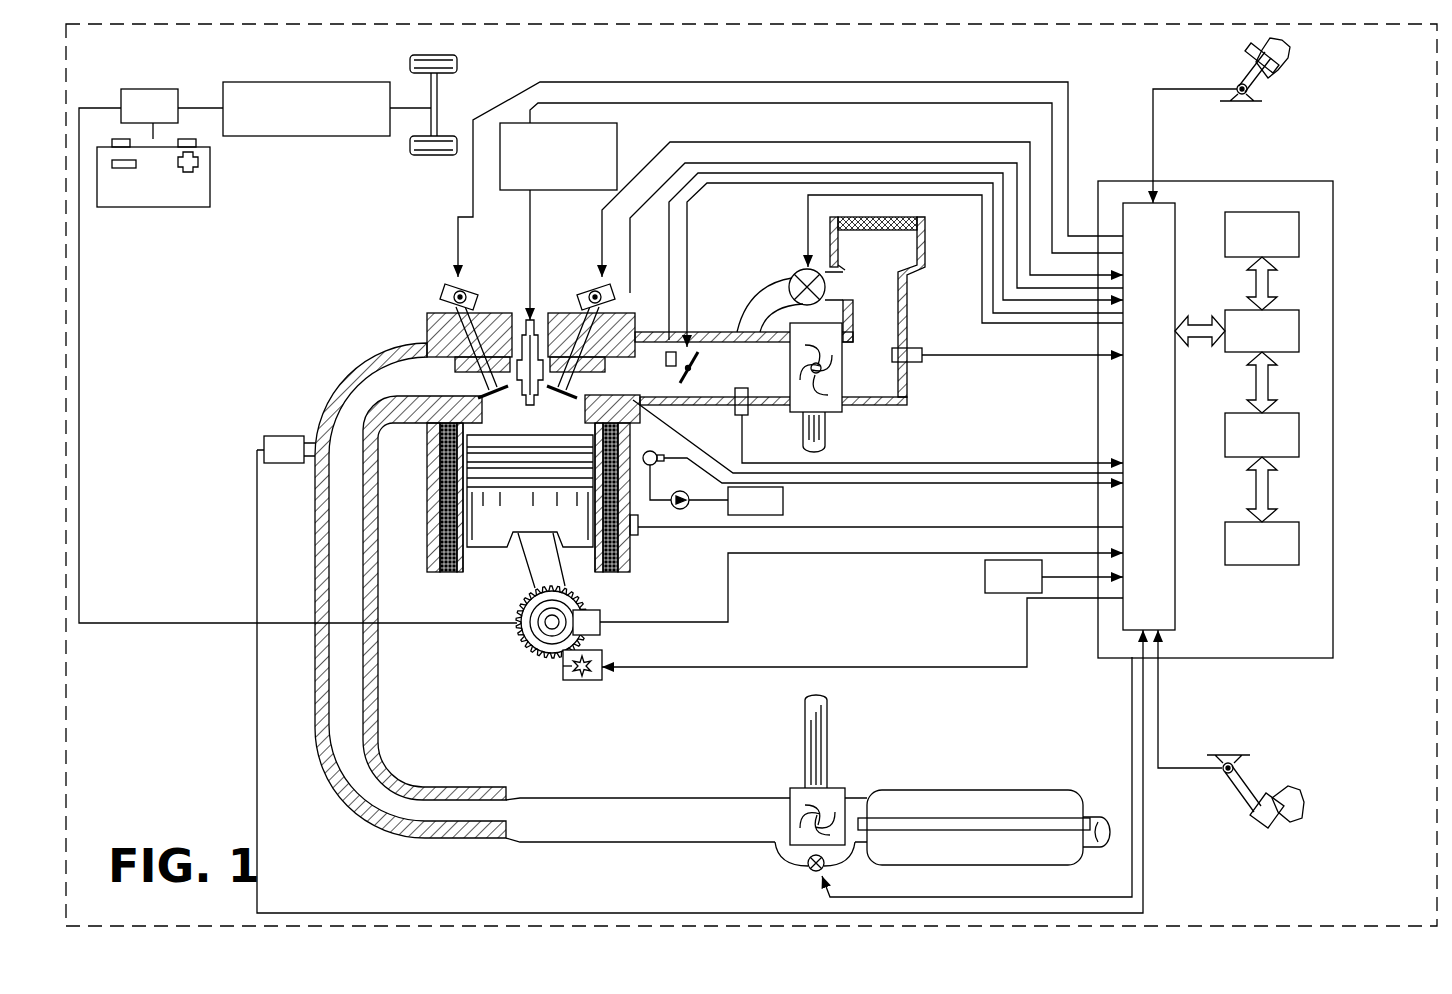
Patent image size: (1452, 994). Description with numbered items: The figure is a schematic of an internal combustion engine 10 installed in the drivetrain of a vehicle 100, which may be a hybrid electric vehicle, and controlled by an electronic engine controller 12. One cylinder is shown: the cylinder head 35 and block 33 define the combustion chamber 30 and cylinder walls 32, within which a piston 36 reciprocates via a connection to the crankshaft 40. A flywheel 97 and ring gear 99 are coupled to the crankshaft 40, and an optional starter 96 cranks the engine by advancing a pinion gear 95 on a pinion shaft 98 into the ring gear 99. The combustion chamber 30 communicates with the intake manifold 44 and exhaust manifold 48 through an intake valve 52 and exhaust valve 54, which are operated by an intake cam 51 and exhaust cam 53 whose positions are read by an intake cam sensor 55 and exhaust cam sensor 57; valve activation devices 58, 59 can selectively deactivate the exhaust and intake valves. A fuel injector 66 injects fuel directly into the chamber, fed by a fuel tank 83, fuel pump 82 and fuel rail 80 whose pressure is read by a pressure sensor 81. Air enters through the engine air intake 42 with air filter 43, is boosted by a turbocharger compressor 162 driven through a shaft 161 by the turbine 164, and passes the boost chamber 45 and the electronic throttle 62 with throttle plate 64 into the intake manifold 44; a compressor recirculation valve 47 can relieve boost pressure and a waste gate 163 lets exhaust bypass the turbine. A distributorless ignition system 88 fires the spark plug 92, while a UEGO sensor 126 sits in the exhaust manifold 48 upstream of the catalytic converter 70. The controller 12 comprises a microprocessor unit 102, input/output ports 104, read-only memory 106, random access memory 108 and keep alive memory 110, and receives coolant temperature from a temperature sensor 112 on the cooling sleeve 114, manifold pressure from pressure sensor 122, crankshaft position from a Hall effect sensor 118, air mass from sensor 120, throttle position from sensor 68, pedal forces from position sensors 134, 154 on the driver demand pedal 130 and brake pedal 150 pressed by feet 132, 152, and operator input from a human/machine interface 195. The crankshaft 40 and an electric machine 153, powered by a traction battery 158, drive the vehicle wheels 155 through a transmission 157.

The internal combustion engine 10 is at (358, 263).
The electronic engine controller 12 is at (1330, 183).
The combustion chamber 30 is at (525, 418).
The cylinder walls 32 is at (470, 574).
The block 33 is at (424, 478).
The cylinder head 35 is at (424, 312).
The piston 36 is at (520, 560).
The crankshaft 40 is at (533, 657).
The engine air intake 42 is at (752, 240).
The air filter 43 is at (892, 232).
The intake manifold 44 is at (744, 357).
The boost chamber 45 is at (773, 382).
The compressor recirculation valve 47 is at (800, 270).
The exhaust manifold 48 is at (591, 592).
The intake cam 51 is at (599, 282).
The intake valve 52 is at (575, 384).
The exhaust cam 53 is at (464, 284).
The exhaust valve 54 is at (430, 358).
The intake cam sensor 55 is at (612, 300).
The exhaust cam sensor 57 is at (447, 291).
The valve activation device 58 is at (476, 304).
The valve activation device 59 is at (588, 304).
The electronic throttle 62 is at (694, 356).
The throttle plate 64 is at (735, 395).
The fuel injector 66 is at (881, 456).
The throttle position sensor 68 is at (670, 350).
The catalytic converter 70 is at (905, 790).
The fuel rail 80 is at (669, 490).
The pressure sensor 81 is at (682, 483).
The fuel pump 82 is at (691, 503).
The fuel tank 83 is at (755, 501).
The distributorless ignition system 88 is at (610, 123).
The spark plug 92 is at (534, 318).
The pinion gear 95 is at (586, 686).
The starter 96 is at (600, 682).
The flywheel 97 is at (516, 637).
The pinion shaft 98 is at (574, 688).
The ring gear 99 is at (545, 666).
The vehicle 100 is at (66, 660).
The microprocessor unit 102 is at (1299, 333).
The input/output ports 104 is at (1175, 213).
The read-only memory 106 is at (1299, 235).
The random access memory 108 is at (1299, 433).
The keep alive memory 110 is at (1299, 540).
The temperature sensor 112 is at (641, 526).
The cooling sleeve 114 is at (632, 543).
The Hall effect sensor 118 is at (600, 613).
The air mass sensor 120 is at (905, 348).
The pressure sensor 122 is at (738, 416).
The Universal Exhaust Gas Oxygen sensor 126 is at (268, 436).
The driver demand pedal 130 is at (1228, 72).
The foot 132 is at (1290, 48).
The position sensor 134 is at (1250, 92).
The brake pedal 150 is at (1254, 814).
The foot 152 is at (1294, 790).
The electric machine 153 is at (162, 89).
The position sensor 154 is at (1224, 766).
The vehicle wheels 155 is at (448, 72).
The transmission 157 is at (330, 137).
The traction battery 158 is at (150, 207).
The shaft 161 is at (803, 425).
The turbocharger compressor 162 is at (832, 393).
The waste gate 163 is at (810, 873).
The turbocharger turbine 164 is at (796, 788).
The human/machine interface 195 is at (1054, 576).